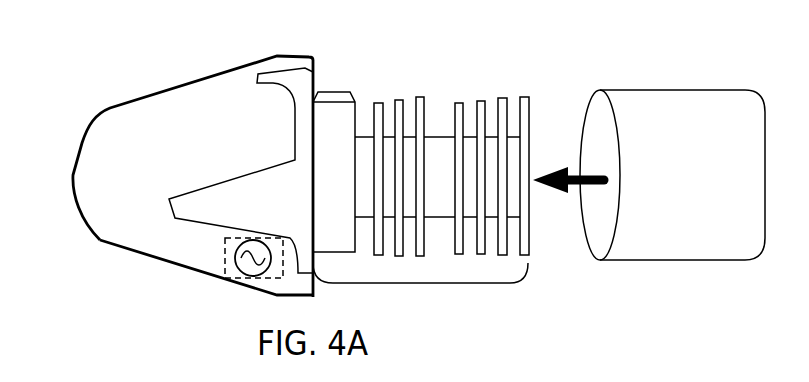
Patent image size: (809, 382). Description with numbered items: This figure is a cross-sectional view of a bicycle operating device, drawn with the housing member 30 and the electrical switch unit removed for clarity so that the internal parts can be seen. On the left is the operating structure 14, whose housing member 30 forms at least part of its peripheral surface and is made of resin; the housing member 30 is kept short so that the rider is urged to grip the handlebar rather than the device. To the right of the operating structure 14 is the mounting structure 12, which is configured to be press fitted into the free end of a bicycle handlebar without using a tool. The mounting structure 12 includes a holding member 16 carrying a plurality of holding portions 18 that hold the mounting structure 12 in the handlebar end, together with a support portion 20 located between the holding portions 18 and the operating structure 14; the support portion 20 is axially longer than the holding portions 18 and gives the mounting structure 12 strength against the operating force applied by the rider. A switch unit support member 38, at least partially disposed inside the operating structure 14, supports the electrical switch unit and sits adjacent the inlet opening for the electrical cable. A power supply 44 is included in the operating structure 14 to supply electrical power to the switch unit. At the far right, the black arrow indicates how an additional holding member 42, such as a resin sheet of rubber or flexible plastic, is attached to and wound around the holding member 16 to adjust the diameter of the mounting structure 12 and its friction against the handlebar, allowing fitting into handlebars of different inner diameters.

The mounting structure 12 is at (462, 185).
The operating structure 14 is at (179, 192).
The holding member 16 is at (420, 285).
The holding portions 18 is at (503, 98).
The support portion 20 is at (333, 89).
The housing member 30 is at (178, 269).
The switch unit support member 38 is at (205, 208).
The additional holding member 42 is at (682, 262).
The power supply 44 is at (250, 279).